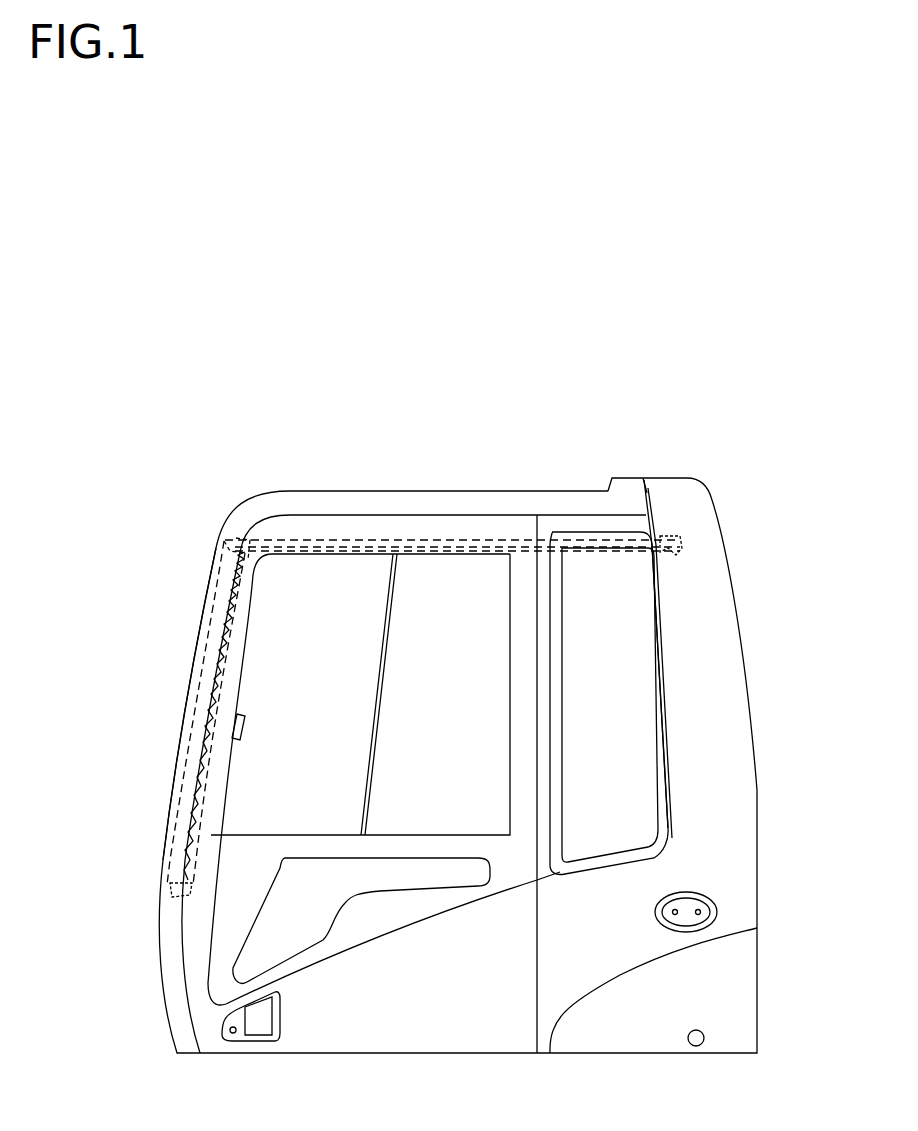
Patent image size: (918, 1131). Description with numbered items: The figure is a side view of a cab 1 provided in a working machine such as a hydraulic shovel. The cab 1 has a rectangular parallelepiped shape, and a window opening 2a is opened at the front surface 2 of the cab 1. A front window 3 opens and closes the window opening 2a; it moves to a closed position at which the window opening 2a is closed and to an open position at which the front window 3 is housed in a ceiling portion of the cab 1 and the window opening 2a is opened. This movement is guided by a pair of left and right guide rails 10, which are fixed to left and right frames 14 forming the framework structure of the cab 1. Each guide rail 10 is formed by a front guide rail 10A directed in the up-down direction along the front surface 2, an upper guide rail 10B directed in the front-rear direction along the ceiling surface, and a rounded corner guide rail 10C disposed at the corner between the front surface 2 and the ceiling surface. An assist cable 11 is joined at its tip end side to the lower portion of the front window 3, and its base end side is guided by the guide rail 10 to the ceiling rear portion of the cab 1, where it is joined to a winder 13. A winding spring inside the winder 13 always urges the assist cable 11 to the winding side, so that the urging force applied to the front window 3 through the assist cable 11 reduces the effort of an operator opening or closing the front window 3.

The cab 1 is at (409, 701).
The front surface 2 is at (177, 722).
The window opening 2a is at (193, 658).
The front window 3 is at (213, 611).
The guide rail 10 is at (483, 649).
The front guide rail 10A is at (192, 790).
The upper guide rail 10B is at (436, 555).
The rounded corner guide rail 10C is at (259, 573).
The assist cable 11 is at (513, 537).
The winder 13 is at (684, 549).
The frame 14 is at (463, 503).